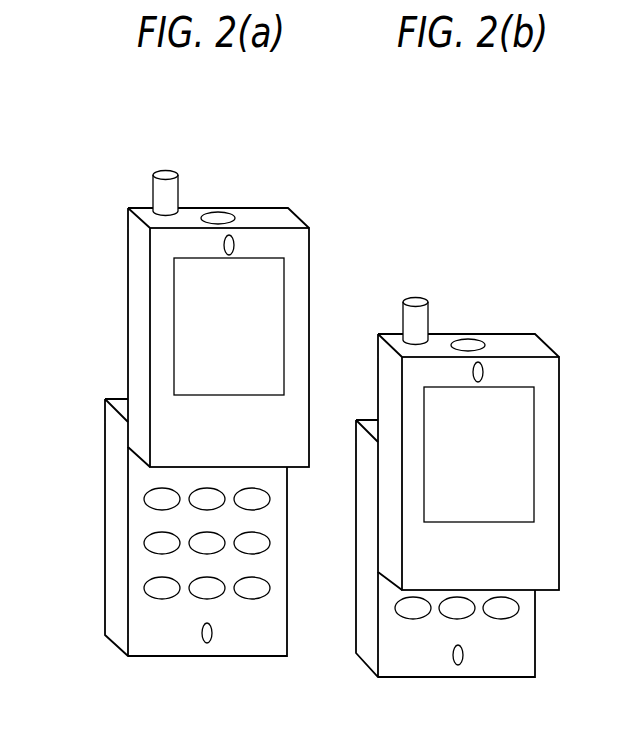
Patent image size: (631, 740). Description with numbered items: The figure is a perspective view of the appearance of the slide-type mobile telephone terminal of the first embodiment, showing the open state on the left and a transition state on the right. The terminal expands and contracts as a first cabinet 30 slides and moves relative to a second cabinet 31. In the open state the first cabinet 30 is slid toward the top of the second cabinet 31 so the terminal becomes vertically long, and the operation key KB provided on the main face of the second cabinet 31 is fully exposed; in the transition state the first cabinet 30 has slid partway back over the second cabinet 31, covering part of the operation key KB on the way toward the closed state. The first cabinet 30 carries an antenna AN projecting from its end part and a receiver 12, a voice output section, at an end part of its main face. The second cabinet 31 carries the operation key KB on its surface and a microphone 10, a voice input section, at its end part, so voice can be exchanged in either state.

In FIG. 2A, the microphone 10 is at (207, 645).
In FIG. 2B, the microphone 10 is at (460, 667).
In FIG. 2A, the receiver 12 is at (234, 247).
In FIG. 2B, the receiver 12 is at (483, 373).
In FIG. 2A, the first cabinet 30 is at (297, 262).
In FIG. 2B, the first cabinet 30 is at (548, 388).
In FIG. 2A, the second cabinet 31 is at (277, 647).
In FIG. 2B, the second cabinet 31 is at (525, 650).
In FIG. 2A, the antenna AN is at (153, 186).
In FIG. 2B, the antenna AN is at (403, 316).
In FIG. 2A, the operation key KB is at (163, 543).